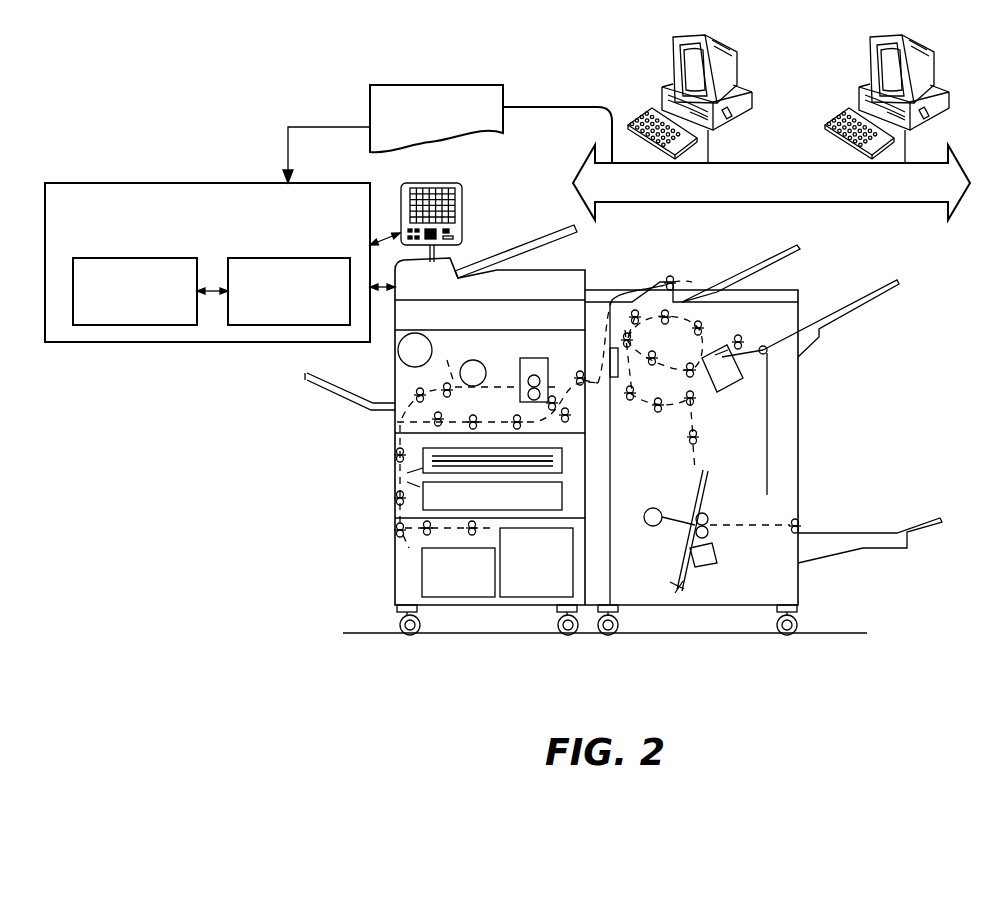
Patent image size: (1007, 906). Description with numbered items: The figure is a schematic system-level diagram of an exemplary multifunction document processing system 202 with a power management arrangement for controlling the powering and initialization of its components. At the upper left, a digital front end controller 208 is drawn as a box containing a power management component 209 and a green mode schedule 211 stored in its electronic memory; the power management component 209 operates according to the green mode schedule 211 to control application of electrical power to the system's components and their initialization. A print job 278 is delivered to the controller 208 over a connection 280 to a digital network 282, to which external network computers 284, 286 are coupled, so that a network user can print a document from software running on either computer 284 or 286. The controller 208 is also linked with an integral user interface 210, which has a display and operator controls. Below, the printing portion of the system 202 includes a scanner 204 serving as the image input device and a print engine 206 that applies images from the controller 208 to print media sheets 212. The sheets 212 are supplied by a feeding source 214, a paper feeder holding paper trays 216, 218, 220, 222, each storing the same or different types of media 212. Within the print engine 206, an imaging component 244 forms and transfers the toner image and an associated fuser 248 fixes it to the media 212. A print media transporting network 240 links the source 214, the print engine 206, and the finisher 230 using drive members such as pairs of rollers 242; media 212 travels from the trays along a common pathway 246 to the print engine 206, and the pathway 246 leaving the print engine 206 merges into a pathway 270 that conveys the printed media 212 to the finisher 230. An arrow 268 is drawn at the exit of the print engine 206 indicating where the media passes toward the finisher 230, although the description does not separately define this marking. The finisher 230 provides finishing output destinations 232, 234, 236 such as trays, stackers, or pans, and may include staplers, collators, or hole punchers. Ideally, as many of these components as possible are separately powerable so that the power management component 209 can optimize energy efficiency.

The document processing system 202 is at (230, 98).
The scanner 204 is at (537, 235).
The print engine 206 is at (397, 365).
The digital front end controller 208 is at (205, 183).
The power management component 209 is at (290, 258).
The user interface 210 is at (462, 193).
The green mode schedule 211 is at (140, 258).
The print media sheets 212 is at (552, 468).
The feeding source 214 is at (383, 450).
The paper tray 216 is at (423, 468).
The paper tray 218 is at (423, 500).
The paper tray 220 is at (455, 598).
The paper tray 222 is at (530, 597).
The finisher 230 is at (825, 402).
The finishing output destination 232 is at (790, 257).
The finishing output destination 234 is at (858, 312).
The finishing output destination 236 is at (850, 532).
The print media transporting network 240 is at (599, 421).
The pairs of rollers 242 is at (416, 393).
The imaging component 244 is at (480, 358).
The pathway 246 is at (437, 350).
The fuser 248 is at (520, 400).
The output paper path 268 is at (565, 360).
The pathway 270 is at (620, 285).
The print job 278 is at (370, 101).
The connection 280 is at (520, 103).
The digital network 282 is at (758, 203).
The network computer 284 is at (737, 60).
The network computer 286 is at (933, 62).